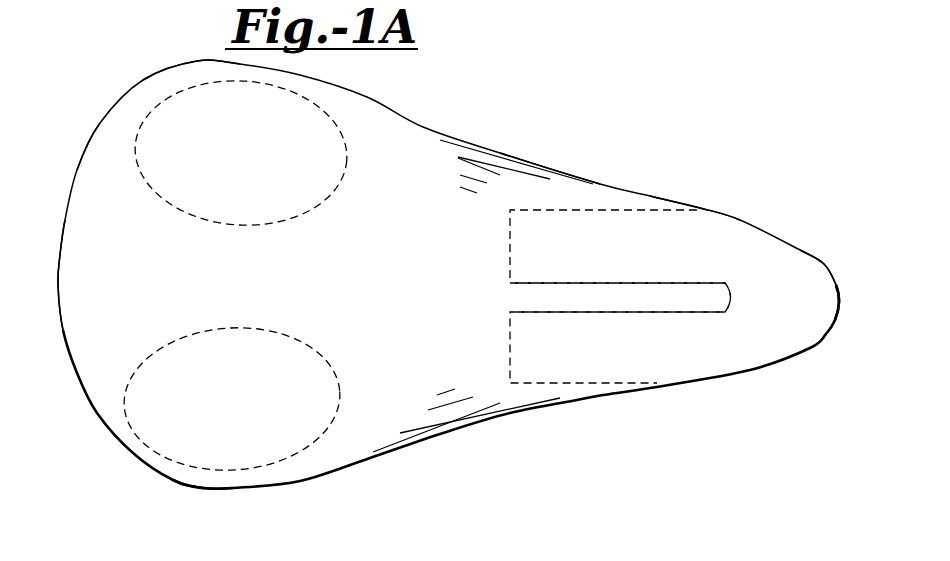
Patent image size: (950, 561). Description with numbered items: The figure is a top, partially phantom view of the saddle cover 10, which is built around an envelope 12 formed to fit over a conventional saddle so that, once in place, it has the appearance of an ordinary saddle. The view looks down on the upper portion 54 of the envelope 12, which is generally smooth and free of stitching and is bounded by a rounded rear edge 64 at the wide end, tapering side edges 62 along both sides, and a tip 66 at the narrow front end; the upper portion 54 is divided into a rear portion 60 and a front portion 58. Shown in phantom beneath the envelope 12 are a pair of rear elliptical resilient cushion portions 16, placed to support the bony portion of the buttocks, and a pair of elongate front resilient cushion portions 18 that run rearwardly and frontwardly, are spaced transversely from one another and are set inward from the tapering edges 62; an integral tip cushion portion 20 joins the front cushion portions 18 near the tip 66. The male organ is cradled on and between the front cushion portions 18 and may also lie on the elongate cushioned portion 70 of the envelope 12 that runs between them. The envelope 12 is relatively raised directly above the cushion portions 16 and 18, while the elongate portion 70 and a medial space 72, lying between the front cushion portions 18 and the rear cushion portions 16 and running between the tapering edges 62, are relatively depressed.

The saddle cover 10 is at (560, 140).
The envelope 12 is at (455, 132).
The rear resilient cushion portions 16 is at (347, 155).
The front resilient cushion portions 18 is at (598, 210).
The tip cushion portion 20 is at (803, 278).
The upper portion 54 is at (96, 283).
The front portion 58 is at (687, 202).
The rear portion 60 is at (202, 488).
The tapering side edges 62 is at (218, 61).
The rounded rear edge 64 is at (60, 263).
The tip 66 is at (838, 310).
The elongate cushioned portion 70 is at (522, 297).
The medial space 72 is at (393, 308).